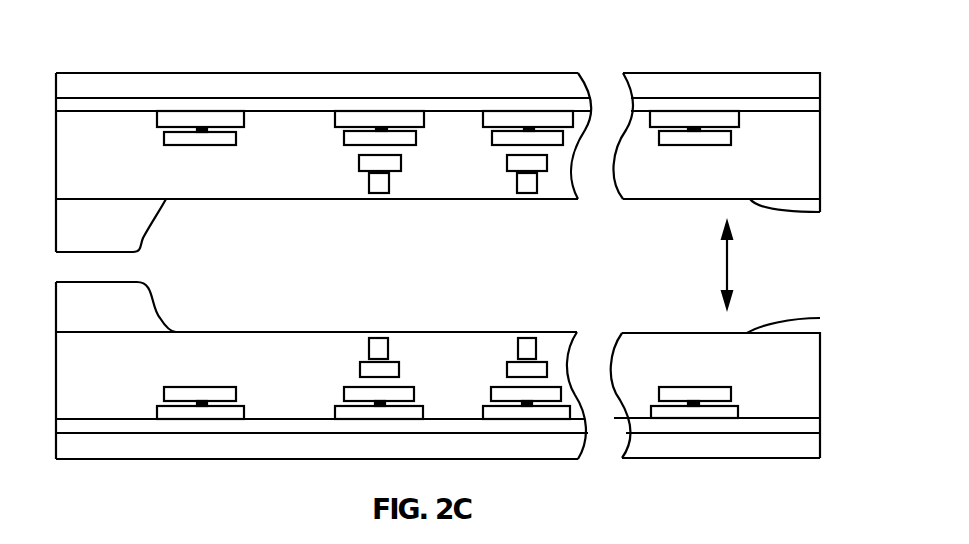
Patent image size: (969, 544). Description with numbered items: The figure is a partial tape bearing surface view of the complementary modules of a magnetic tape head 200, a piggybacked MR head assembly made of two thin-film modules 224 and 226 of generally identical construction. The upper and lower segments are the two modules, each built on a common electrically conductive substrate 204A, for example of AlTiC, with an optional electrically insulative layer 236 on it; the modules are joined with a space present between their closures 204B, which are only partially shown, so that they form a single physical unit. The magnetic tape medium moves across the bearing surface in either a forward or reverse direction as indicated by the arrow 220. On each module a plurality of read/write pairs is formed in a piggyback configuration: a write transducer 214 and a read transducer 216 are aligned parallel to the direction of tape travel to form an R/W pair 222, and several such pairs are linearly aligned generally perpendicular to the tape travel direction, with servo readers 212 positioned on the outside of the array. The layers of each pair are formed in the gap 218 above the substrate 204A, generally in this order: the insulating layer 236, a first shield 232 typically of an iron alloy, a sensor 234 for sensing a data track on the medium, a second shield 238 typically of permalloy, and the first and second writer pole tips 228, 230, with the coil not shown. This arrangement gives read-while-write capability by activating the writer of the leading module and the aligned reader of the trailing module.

The magnetic tape head 200 is at (371, 55).
The common substrate 204A is at (323, 85).
The closures 204B is at (150, 228).
The servo readers 212 is at (242, 372).
The write transducer 214 is at (373, 336).
The read transducer 216 is at (364, 386).
The gap 218 is at (244, 200).
The arrow 220 is at (727, 268).
The R/W pair 222 is at (387, 304).
The thin-film module 224 is at (746, 73).
The thin-film module 226 is at (733, 458).
The first writer pole tip 228 is at (360, 372).
The second writer pole tip 230 is at (368, 345).
The first shield 232 is at (335, 410).
The sensor 234 is at (325, 396).
The electrically insulative layer 236 is at (762, 422).
The second shield 238 is at (343, 392).